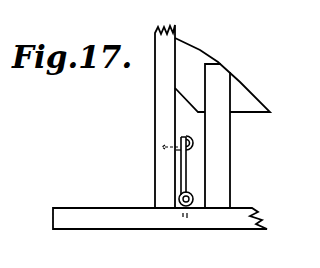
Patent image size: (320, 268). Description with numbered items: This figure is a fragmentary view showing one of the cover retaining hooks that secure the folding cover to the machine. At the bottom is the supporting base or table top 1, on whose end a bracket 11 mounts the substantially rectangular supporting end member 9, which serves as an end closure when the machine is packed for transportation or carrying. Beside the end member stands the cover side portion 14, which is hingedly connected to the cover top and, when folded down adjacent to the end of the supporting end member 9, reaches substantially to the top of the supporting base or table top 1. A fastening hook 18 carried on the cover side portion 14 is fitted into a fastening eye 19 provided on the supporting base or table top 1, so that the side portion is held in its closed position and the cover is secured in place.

The supporting base or table top 1 is at (130, 207).
The supporting end member 9 is at (247, 100).
The bracket 11 is at (230, 162).
The cover side portion 14 is at (155, 125).
The fastening hook 18 is at (178, 161).
The fastening eye 19 is at (193, 202).